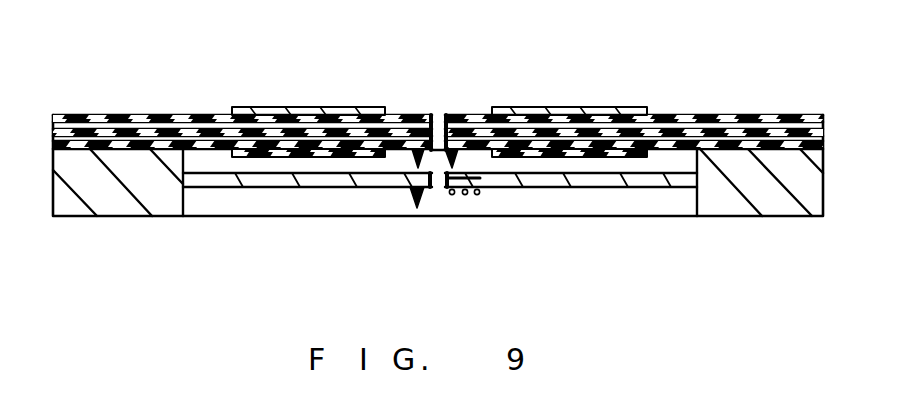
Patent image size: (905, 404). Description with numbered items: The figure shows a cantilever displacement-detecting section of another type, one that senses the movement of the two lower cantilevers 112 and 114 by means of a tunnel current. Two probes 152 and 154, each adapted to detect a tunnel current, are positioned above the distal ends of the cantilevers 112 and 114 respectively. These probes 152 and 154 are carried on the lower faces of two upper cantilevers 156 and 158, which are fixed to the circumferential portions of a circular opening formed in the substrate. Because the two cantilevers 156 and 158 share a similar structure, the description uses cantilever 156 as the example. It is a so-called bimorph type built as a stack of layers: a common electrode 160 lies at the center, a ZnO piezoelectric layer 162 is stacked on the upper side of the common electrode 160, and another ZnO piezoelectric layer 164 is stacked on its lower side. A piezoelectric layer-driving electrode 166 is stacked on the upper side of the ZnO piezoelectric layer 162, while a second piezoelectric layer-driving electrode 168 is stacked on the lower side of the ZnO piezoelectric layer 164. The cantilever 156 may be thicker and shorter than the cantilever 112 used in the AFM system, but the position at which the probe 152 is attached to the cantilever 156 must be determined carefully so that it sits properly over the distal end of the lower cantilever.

The cantilever 112 is at (232, 184).
The cantilever 114 is at (655, 184).
The probe 152 is at (416, 156).
The probe 154 is at (462, 156).
The cantilever 156 is at (349, 84).
The cantilever 158 is at (570, 92).
The common electrode 160 is at (414, 114).
The ZnO piezoelectric layer 162 is at (188, 114).
The ZnO piezoelectric layer 164 is at (100, 114).
The piezoelectric layer-driving electrode 166 is at (308, 143).
The piezoelectric layer-driving electrode 168 is at (333, 157).